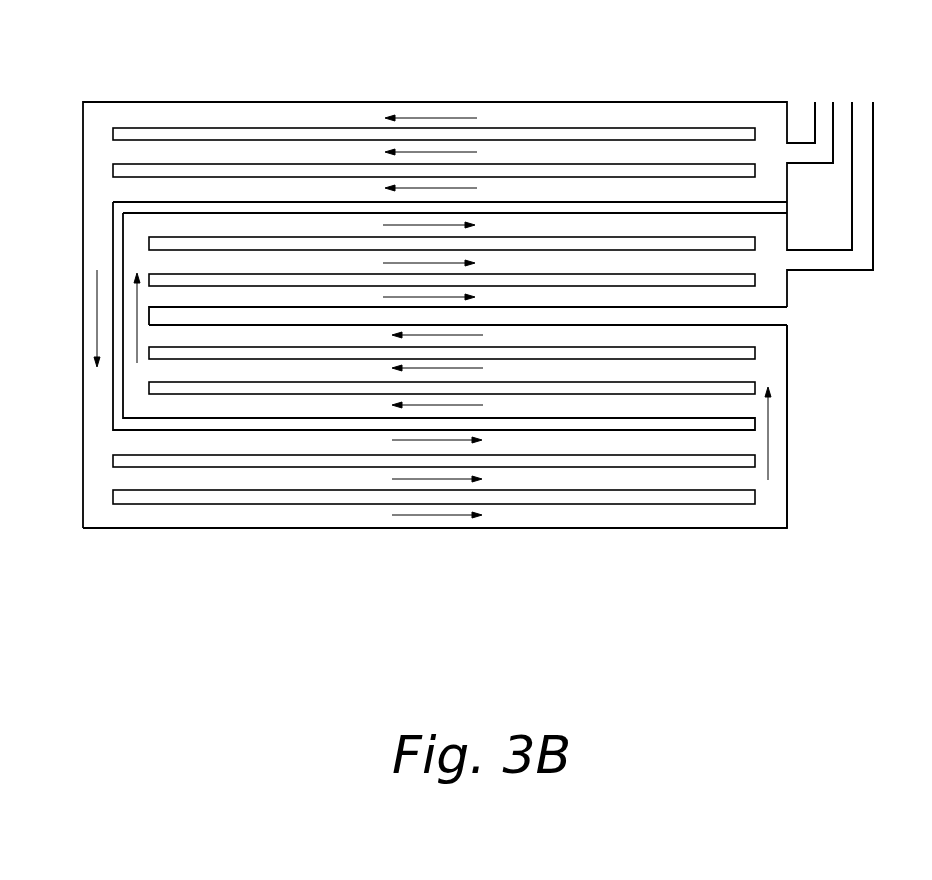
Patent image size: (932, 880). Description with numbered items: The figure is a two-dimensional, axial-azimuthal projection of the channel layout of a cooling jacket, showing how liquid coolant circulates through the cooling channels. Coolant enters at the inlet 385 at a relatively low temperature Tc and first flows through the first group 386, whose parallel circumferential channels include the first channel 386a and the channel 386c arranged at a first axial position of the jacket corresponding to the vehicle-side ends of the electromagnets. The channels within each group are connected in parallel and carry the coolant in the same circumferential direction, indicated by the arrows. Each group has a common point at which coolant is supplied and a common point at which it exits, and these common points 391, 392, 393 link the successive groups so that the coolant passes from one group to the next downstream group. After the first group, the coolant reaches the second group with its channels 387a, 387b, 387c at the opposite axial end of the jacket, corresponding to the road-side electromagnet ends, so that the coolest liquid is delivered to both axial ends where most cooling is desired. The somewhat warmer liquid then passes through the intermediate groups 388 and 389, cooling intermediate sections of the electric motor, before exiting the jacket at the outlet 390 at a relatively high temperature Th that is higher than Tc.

The inlet 385 is at (825, 108).
The first group of channels 386 is at (66, 103).
The first channel 386a is at (298, 118).
The channel of the first group 386c is at (555, 195).
The channel of the second group 387a is at (202, 438).
The channel of the second group 387b is at (320, 477).
The channel of the second group 387c is at (553, 512).
The intermediate group of channels 388 is at (113, 405).
The intermediate group of channels 389 is at (113, 300).
The outlet 390 is at (861, 262).
The common point 391 is at (95, 197).
The common point 392 is at (775, 437).
The common point 393 is at (140, 367).
The relatively low temperature Tc is at (823, 122).
The relatively high temperature Th is at (863, 170).